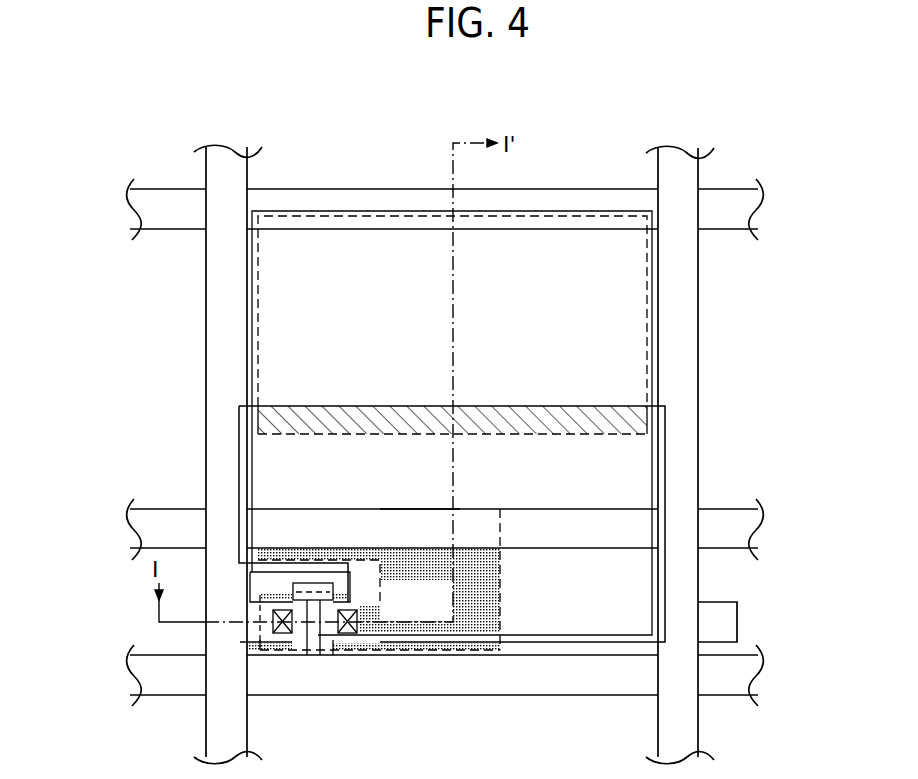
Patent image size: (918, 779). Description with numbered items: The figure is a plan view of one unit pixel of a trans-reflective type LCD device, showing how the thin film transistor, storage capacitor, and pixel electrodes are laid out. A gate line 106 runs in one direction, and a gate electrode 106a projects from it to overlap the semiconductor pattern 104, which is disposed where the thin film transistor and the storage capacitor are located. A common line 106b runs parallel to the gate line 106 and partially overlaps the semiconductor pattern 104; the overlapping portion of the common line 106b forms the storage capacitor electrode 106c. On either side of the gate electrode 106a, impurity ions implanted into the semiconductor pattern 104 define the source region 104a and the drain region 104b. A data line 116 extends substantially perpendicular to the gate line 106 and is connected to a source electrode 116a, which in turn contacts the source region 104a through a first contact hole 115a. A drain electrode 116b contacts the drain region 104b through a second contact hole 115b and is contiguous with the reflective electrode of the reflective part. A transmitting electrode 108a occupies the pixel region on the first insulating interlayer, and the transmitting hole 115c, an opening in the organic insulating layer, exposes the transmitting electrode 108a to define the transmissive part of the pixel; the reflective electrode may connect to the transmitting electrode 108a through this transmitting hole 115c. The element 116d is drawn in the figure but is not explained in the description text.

The semiconductor pattern 104 is at (355, 593).
The source region 104a is at (275, 592).
The drain region 104b is at (358, 640).
The gate line 106 is at (521, 686).
The gate electrode 106a is at (315, 593).
The common line 106b is at (147, 533).
The storage capacitor electrode 106c is at (418, 505).
The transmitting electrode 108a is at (655, 317).
The first contact hole 115a is at (280, 622).
The second contact hole 115b is at (358, 618).
The transmitting hole 115c is at (647, 355).
The data line 116 is at (217, 357).
The source electrode 116a is at (300, 633).
The drain electrode 116b is at (327, 633).
The storage capacitor electrode 116d is at (665, 465).